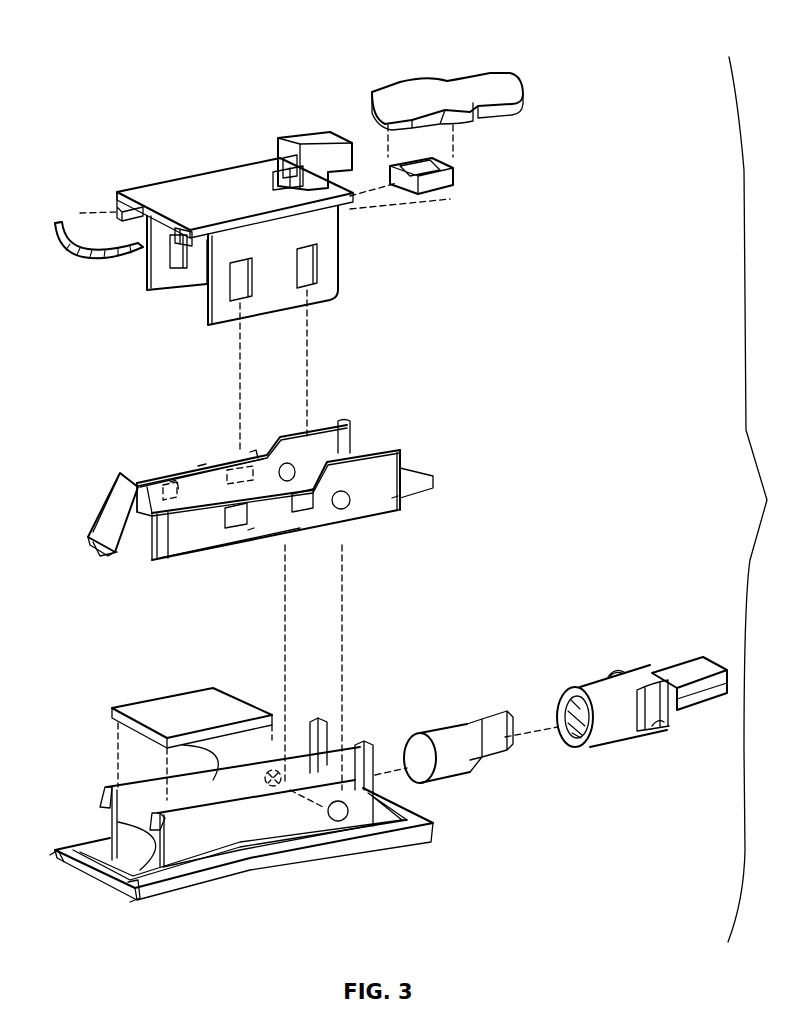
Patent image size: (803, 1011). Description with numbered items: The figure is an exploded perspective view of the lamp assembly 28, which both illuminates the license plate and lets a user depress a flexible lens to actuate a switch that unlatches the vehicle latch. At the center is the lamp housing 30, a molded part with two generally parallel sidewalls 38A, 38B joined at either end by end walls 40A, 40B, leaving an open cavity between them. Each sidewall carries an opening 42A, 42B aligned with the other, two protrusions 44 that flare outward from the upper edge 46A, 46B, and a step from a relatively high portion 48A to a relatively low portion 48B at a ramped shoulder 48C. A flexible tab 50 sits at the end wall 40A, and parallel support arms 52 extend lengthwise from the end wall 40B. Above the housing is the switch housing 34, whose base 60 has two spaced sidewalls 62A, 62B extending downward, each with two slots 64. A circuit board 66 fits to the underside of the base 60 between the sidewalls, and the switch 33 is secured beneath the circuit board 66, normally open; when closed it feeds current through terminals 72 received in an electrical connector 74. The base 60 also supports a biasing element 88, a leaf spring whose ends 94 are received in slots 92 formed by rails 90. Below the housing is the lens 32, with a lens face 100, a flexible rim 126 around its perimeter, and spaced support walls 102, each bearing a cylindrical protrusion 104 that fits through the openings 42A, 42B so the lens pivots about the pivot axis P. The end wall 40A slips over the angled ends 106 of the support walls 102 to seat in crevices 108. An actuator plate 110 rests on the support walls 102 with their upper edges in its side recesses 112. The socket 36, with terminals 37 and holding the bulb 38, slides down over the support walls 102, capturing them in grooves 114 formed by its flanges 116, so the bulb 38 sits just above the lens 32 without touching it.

The lamp assembly 28 is at (126, 40).
The lamp housing 30 is at (380, 447).
The lens 32 is at (255, 870).
The switch 33 is at (432, 192).
The switch housing 34 is at (187, 188).
The socket 36 is at (574, 690).
The terminals 37 is at (680, 668).
The bulb 38 is at (447, 745).
The sidewall 38A is at (180, 537).
The sidewall 38B is at (140, 477).
The end wall 40A is at (150, 520).
The end wall 40B is at (343, 423).
The opening 42A is at (348, 506).
The opening 42B is at (284, 463).
The protrusions 44 is at (168, 482).
The upper edge 46A is at (117, 553).
The upper edge 46B is at (170, 478).
The relatively high portion 48A is at (298, 437).
The relatively low portion 48B is at (200, 466).
The ramped shoulder 48C is at (260, 452).
The flexible tab 50 is at (100, 507).
The support arms 52 is at (357, 456).
The base 60 is at (226, 178).
The sidewall 62A is at (322, 297).
The sidewall 62B is at (148, 286).
The slots 64 is at (170, 262).
The circuit board 66 is at (513, 84).
The terminals 72 is at (277, 172).
The electrical connector 74 is at (293, 145).
The biasing element 88 is at (60, 244).
The rails 90 is at (112, 209).
The slots 92 is at (118, 194).
The ends 94 is at (60, 224).
The lens face 100 is at (200, 897).
The support walls 102 is at (146, 791).
The cylindrical protrusion 104 is at (275, 770).
The angled ends 106 is at (102, 790).
The crevices 108 is at (108, 812).
The actuator plate 110 is at (178, 705).
The side recesses 112 is at (265, 779).
The grooves 114 is at (612, 668).
The flanges 116 is at (609, 676).
The flexible rim 126 is at (428, 818).
The pivot axis P is at (430, 860).